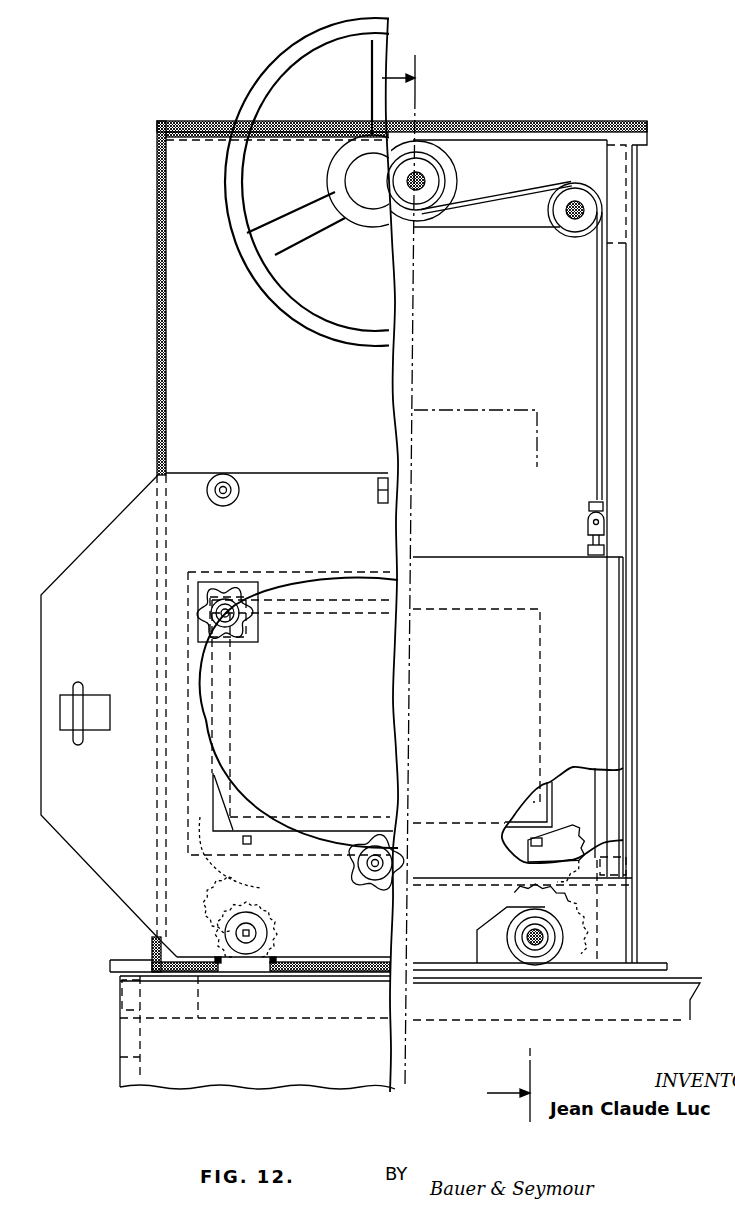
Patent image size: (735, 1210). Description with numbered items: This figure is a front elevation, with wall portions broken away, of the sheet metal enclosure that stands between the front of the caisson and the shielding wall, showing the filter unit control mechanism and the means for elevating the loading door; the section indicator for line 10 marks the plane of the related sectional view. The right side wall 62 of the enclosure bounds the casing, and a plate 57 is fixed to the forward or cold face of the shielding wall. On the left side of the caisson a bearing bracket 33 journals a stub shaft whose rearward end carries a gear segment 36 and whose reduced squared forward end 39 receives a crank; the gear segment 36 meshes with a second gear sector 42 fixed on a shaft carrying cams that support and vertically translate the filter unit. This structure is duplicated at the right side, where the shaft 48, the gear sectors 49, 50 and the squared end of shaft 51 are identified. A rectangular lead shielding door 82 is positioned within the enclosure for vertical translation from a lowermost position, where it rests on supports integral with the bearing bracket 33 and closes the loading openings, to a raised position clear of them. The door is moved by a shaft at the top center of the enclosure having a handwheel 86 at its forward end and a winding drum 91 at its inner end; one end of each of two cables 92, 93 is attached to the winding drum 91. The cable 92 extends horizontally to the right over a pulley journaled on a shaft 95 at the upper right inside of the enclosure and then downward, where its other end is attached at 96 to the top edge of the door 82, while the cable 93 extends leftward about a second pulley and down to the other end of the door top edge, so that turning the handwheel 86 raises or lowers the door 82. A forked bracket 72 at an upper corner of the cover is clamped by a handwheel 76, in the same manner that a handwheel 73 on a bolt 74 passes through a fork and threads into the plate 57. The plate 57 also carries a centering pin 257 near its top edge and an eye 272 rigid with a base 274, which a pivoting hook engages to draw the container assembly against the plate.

The section line 10- 10 is at (456, 589).
The bearing bracket 33 is at (205, 913).
The gear segment 36 is at (272, 908).
The reduced squared forward end 39 is at (265, 938).
The second gear sector 42 is at (222, 868).
The shaft 48 is at (528, 940).
The gear sector 49 is at (512, 903).
The gear sector 50 is at (561, 832).
The squared end of shaft 51 is at (543, 844).
The plate 57 is at (100, 850).
The right side wall 62 is at (637, 428).
The forked bracket 72 is at (250, 618).
The handwheel 73 is at (372, 889).
The bolt 74 is at (370, 866).
The handwheel 76 is at (242, 636).
The lead shielding door 82 is at (597, 638).
The handwheel 86 is at (303, 320).
The winding drum 91 is at (430, 180).
The cable 92 is at (597, 352).
The cable 93 is at (404, 156).
The shaft 95 is at (578, 204).
The cable attachment 96 is at (590, 532).
The centering pin 257 is at (228, 504).
The eye 272 is at (82, 690).
The base 274 is at (100, 722).